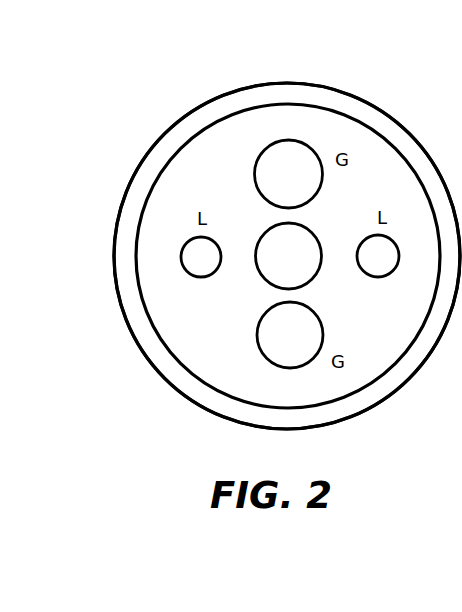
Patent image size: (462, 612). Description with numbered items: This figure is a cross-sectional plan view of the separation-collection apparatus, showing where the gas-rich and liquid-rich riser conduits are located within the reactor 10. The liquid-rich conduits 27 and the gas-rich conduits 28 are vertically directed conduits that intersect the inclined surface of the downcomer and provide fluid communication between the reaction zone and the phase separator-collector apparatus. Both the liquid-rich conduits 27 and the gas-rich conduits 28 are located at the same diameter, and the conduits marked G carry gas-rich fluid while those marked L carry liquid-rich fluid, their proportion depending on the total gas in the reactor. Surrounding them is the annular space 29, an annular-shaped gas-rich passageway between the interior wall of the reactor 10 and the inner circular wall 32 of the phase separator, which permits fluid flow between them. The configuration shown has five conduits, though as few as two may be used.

The reactor 10 is at (240, 87).
The liquid-rich conduits 27 is at (180, 250).
The gas-rich conduits 28 is at (257, 352).
The annular space 29 is at (198, 120).
The inner wall 32 is at (162, 168).